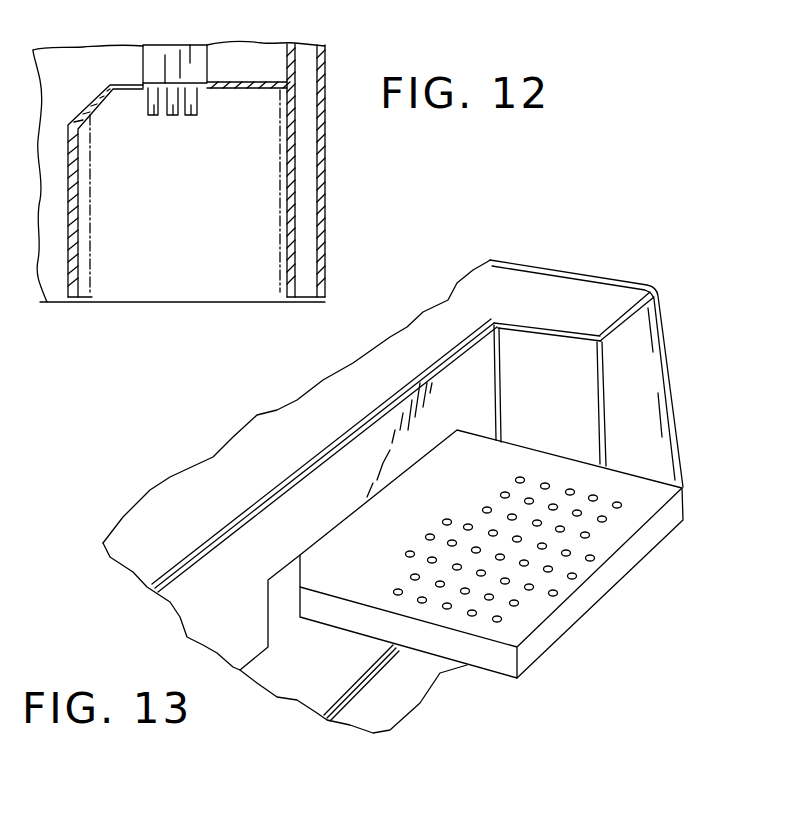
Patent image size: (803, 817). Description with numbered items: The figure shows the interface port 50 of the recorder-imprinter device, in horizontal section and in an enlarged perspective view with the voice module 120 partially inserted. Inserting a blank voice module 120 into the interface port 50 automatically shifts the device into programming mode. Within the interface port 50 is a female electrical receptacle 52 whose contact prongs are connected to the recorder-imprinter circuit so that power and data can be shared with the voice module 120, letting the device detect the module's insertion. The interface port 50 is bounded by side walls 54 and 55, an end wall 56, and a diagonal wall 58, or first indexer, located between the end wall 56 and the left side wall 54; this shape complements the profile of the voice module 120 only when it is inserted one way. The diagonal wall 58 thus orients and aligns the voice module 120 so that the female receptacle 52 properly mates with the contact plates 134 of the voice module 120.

In FIG. 12, the interface port 50 is at (147, 272).
In FIG. 13, the interface port 50 is at (281, 610).
In FIG. 12, the female electrical receptacle 52 is at (167, 55).
In FIG. 12, the left side wall 54 is at (68, 229).
In FIG. 12, the side wall 55 is at (300, 212).
In FIG. 12, the end wall 56 is at (265, 68).
In FIG. 12, the diagonal wall 58 is at (90, 110).
In FIG. 12, the contact plates 134 is at (191, 116).
In FIG. 13, the voice module 120 is at (614, 598).